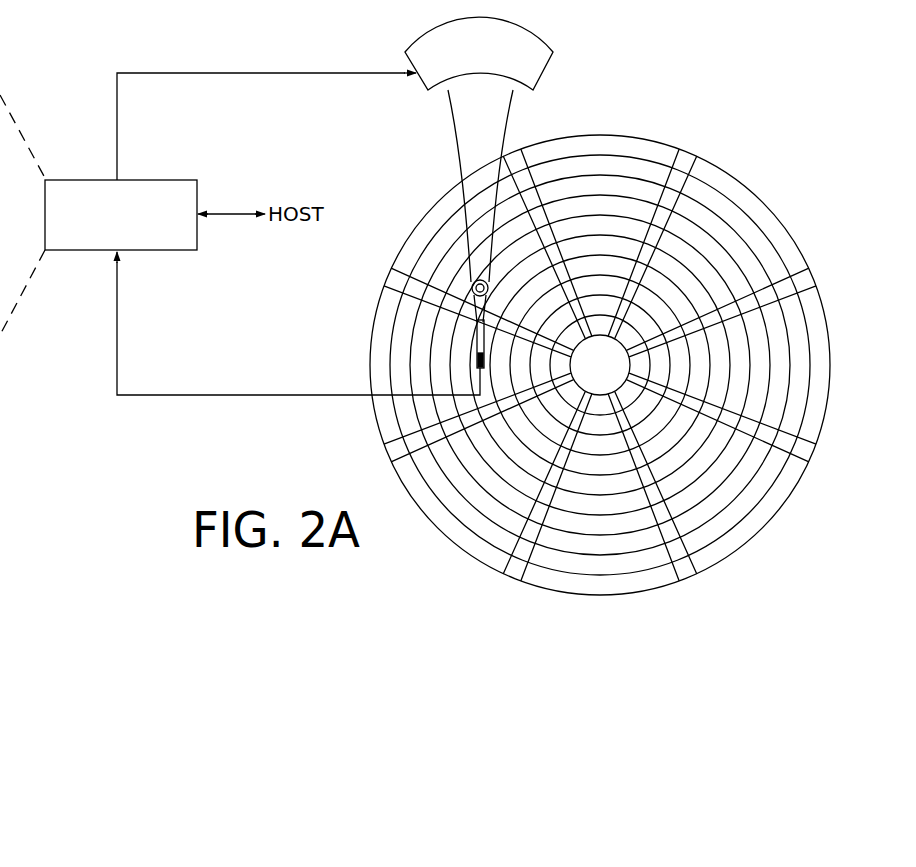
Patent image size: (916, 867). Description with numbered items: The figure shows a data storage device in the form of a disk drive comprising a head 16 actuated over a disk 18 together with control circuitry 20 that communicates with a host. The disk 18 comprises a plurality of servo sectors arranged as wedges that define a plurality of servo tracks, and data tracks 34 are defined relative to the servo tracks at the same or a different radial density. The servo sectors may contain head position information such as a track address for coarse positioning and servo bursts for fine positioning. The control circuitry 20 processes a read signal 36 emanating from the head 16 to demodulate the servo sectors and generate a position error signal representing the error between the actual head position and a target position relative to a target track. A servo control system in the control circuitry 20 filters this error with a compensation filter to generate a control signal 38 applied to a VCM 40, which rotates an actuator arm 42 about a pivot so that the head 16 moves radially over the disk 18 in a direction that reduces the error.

The head 16 is at (474, 357).
The disk 18 is at (760, 184).
The control circuitry 20 is at (160, 179).
The data tracks 34 is at (592, 160).
The read signal 36 is at (254, 394).
The control signal 38 is at (117, 120).
The VCM 40 is at (426, 86).
The actuator arm 42 is at (461, 150).